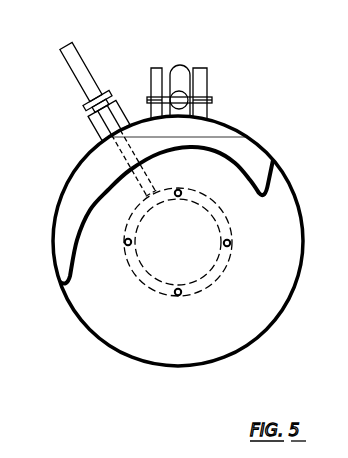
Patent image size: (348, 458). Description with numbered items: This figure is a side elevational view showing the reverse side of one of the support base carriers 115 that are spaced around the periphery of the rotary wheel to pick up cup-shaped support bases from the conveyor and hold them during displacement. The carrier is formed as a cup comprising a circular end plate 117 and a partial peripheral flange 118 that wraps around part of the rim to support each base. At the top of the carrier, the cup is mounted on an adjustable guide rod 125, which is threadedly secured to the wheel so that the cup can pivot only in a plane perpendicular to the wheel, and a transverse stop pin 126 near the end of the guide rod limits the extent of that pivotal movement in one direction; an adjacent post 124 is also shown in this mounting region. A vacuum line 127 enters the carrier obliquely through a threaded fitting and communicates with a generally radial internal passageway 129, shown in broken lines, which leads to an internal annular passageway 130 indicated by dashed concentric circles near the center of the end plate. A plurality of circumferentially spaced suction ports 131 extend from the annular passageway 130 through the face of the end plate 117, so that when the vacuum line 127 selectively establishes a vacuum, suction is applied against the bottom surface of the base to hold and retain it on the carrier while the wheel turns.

The support base carrier 115 is at (282, 124).
The end plate 117 is at (270, 306).
The partial peripheral flange 118 is at (275, 158).
The terminal post 124 is at (158, 68).
The adjustable guide rod 125 is at (181, 67).
The transverse stop pin 126 is at (213, 99).
The vacuum line 127 is at (82, 88).
The radial internal passageway 129 is at (144, 172).
The internal annular passageway 130 is at (222, 211).
The suction ports 131 is at (229, 246).